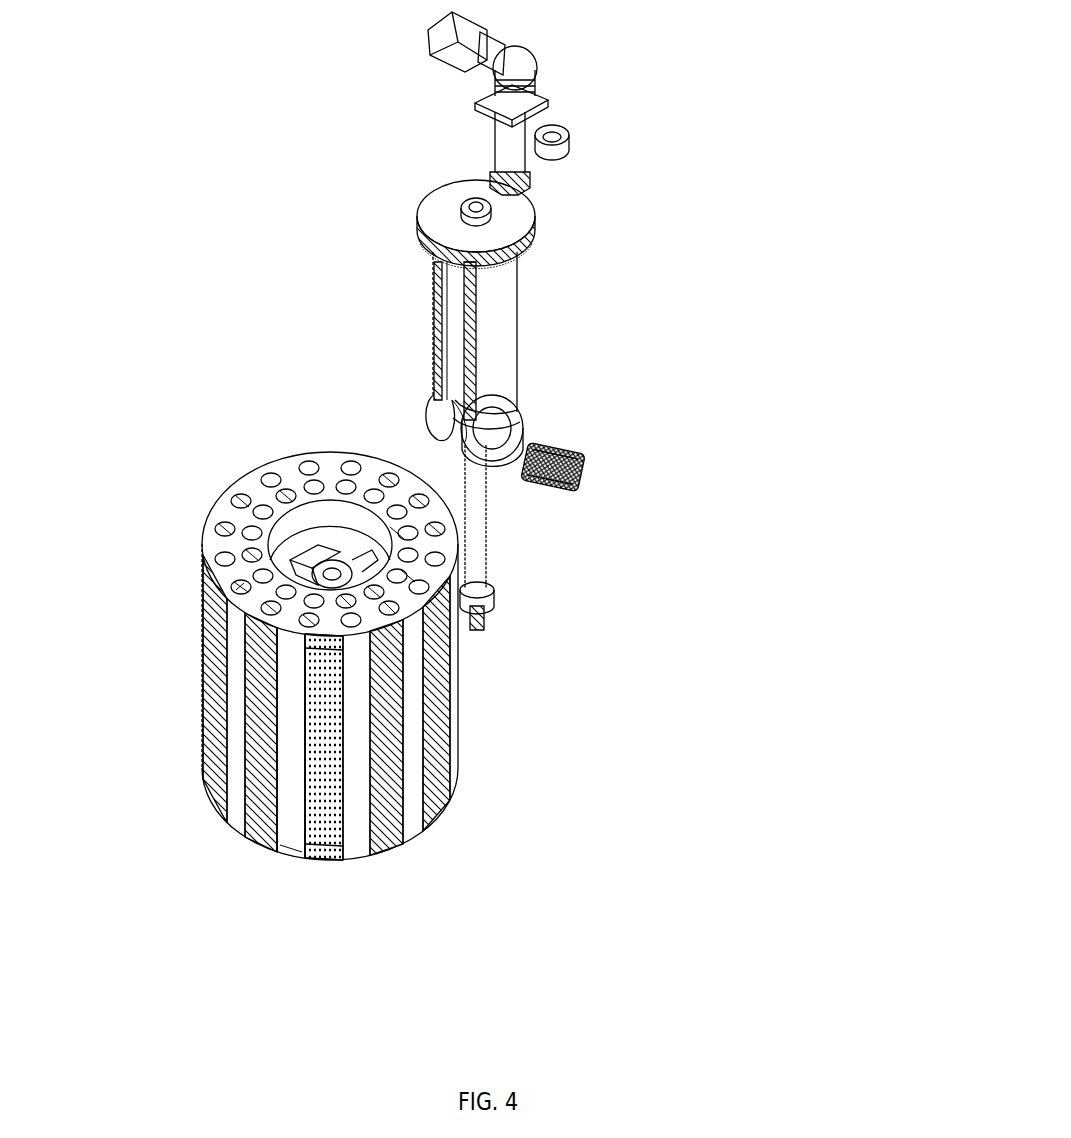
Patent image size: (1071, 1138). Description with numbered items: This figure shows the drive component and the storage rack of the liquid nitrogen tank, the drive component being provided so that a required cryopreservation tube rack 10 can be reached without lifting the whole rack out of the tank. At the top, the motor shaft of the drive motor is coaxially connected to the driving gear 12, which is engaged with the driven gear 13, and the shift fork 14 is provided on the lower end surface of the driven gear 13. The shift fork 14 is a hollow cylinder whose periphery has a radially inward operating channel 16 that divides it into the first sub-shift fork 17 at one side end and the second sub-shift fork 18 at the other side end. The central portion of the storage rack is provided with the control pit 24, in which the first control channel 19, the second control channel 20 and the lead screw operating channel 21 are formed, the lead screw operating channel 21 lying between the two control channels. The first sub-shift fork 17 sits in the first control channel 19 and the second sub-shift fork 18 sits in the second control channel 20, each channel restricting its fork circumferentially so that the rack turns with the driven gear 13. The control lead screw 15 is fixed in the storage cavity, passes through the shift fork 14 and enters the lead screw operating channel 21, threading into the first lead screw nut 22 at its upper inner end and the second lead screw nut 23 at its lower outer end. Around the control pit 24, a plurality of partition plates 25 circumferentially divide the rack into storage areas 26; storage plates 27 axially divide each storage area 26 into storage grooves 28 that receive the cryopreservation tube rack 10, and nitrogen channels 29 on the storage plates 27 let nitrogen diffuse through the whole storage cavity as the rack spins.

The cryopreservation tube rack 10 is at (583, 453).
The driving gear 12 is at (527, 185).
The driven gear 13 is at (532, 236).
The shift fork 14 is at (511, 306).
The control lead screw 15 is at (488, 507).
The operating channel 16 is at (460, 335).
The first sub-shift fork 17 is at (433, 374).
The second sub-shift fork 18 is at (527, 407).
The first control channel 19 is at (357, 558).
The second control channel 20 is at (283, 570).
The lead screw operating channel 21 is at (293, 573).
The first lead screw nut 22 is at (433, 438).
The second lead screw nut 23 is at (487, 617).
The control pit 24 is at (445, 660).
The partition plate 25 is at (287, 853).
The storage area 26 is at (255, 840).
The storage plate 27 is at (330, 845).
The storage groove 28 is at (330, 840).
The nitrogen channel 29 is at (233, 588).